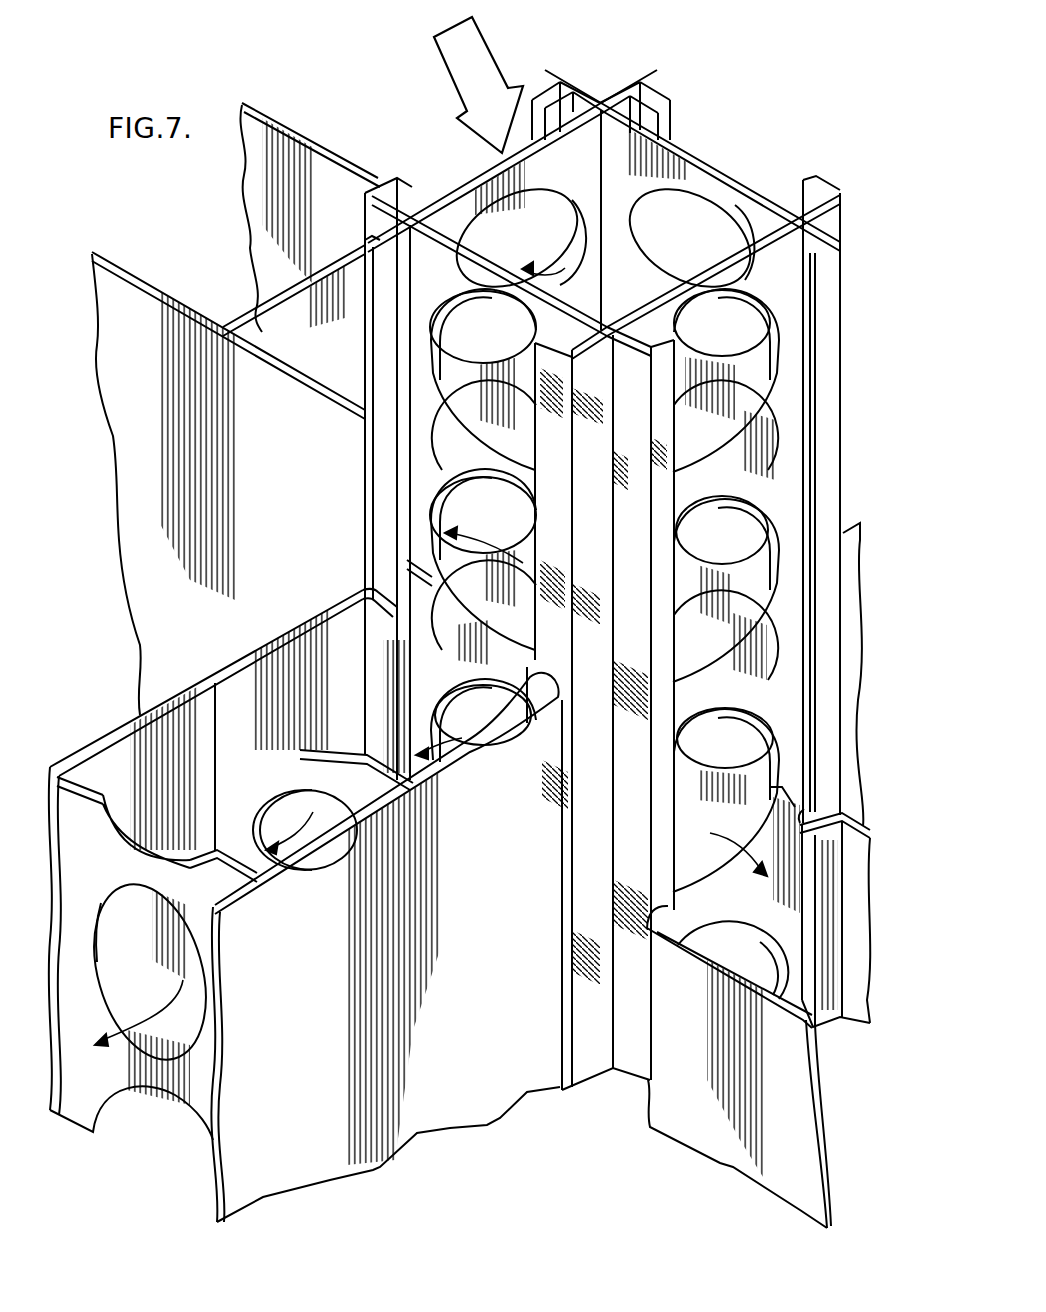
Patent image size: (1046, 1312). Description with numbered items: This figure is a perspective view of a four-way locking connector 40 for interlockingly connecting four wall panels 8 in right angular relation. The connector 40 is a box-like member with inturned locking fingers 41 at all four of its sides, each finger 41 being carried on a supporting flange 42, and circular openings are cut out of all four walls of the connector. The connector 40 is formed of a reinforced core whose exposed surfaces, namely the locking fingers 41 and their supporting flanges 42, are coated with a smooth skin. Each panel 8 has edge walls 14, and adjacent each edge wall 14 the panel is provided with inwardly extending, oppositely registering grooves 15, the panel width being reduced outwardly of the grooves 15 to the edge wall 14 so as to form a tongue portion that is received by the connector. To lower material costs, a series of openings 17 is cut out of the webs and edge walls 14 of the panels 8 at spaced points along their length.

The panel 8 is at (148, 442).
The edge wall 14 is at (427, 665).
The groove 15 is at (393, 614).
The opening 17 is at (326, 868).
The four-way locking connector 40 is at (713, 155).
The locking finger 41 is at (539, 88).
The supporting flange 42 is at (608, 88).